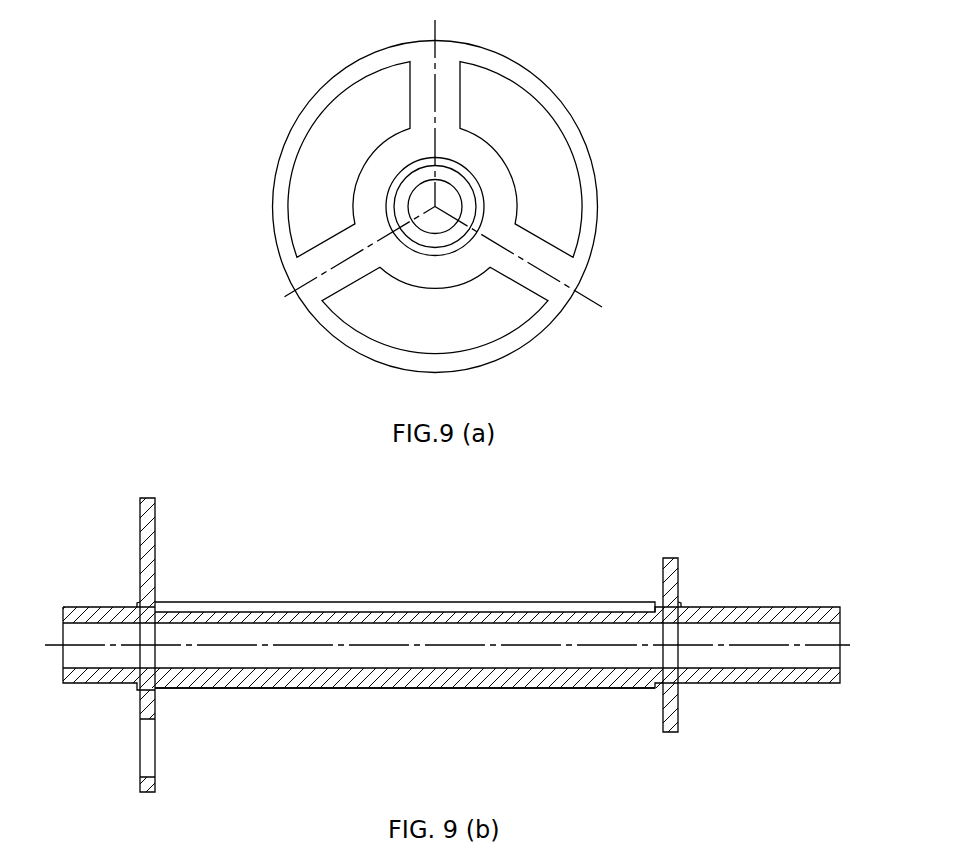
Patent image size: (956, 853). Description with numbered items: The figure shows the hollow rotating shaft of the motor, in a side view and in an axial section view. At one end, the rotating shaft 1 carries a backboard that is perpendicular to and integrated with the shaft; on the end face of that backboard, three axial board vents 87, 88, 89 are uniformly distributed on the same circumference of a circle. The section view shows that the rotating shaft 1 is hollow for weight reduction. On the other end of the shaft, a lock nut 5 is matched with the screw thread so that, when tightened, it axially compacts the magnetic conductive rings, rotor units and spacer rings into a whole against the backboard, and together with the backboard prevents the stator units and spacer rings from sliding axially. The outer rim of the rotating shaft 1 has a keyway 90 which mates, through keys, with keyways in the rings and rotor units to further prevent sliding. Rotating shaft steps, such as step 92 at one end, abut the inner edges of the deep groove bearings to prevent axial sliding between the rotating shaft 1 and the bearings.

The rotating shaft 1 is at (102, 687).
The lock nut 5 is at (670, 580).
The board vent 87 is at (412, 315).
The board vent 88 is at (533, 152).
The board vent 89 is at (336, 152).
The keyway 90 is at (492, 605).
The rotating shaft step 92 is at (680, 602).